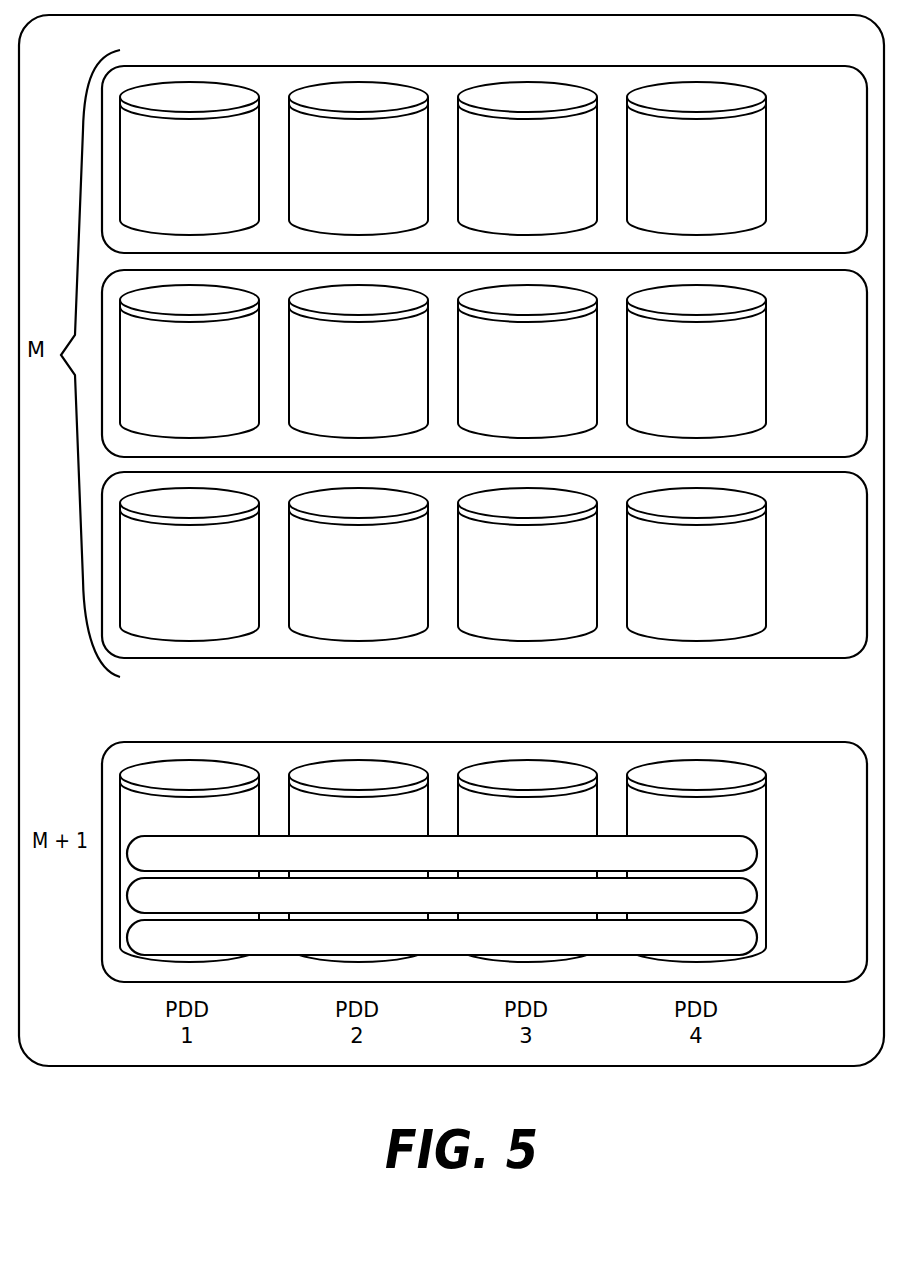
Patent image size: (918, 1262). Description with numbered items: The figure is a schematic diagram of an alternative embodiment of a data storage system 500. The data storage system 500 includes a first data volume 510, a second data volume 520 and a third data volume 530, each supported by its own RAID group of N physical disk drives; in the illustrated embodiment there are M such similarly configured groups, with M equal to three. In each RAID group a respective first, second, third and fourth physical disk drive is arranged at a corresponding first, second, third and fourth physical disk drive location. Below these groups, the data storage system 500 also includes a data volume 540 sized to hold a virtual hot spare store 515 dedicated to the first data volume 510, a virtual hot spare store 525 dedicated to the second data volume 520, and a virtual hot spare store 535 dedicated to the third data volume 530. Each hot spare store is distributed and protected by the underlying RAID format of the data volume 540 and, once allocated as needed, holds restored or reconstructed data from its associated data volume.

The data storage system 500 is at (868, 51).
The first data volume 510 is at (842, 111).
The second data volume 520 is at (842, 314).
The third data volume 530 is at (842, 517).
The data volume 540 is at (842, 786).
The virtual hot spare store 515 is at (715, 863).
The virtual hot spare store 525 is at (715, 906).
The virtual hot spare store 535 is at (715, 948).